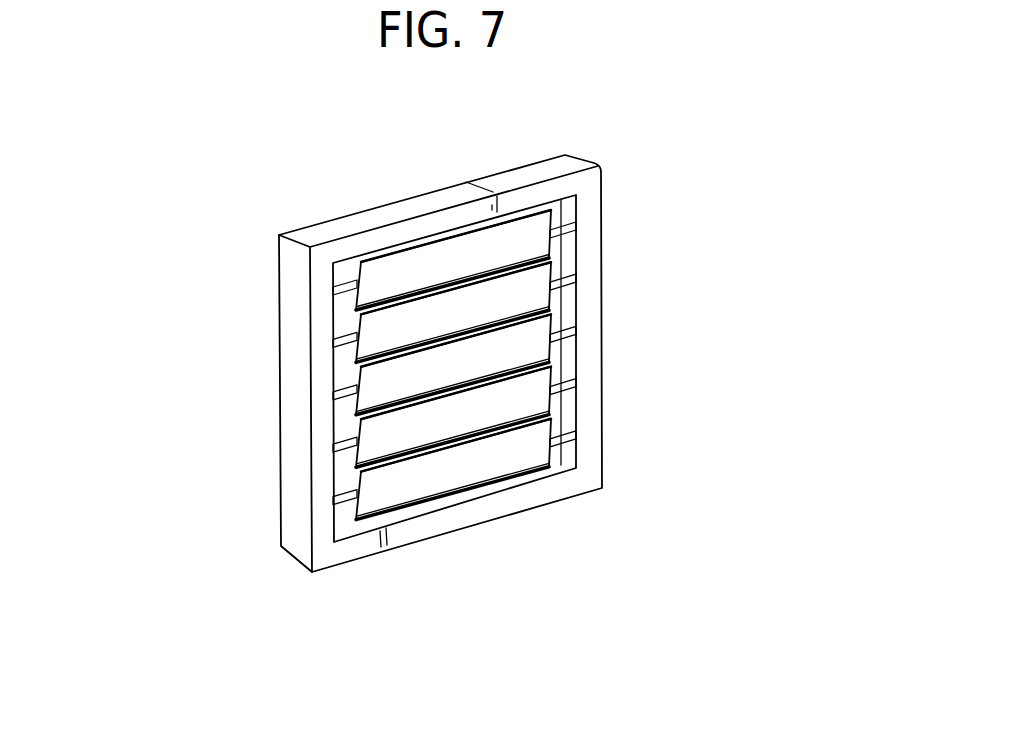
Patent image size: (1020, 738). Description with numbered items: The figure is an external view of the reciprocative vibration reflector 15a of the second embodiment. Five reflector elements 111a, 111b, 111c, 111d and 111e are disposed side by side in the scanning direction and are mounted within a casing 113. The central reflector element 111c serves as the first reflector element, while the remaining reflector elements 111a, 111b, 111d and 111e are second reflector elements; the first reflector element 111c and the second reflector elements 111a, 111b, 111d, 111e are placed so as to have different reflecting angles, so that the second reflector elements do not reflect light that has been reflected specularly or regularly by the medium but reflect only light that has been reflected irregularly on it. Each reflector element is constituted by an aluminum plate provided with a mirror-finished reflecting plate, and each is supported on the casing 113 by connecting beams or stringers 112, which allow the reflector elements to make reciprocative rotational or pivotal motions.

The reciprocative vibration reflector 15a is at (606, 139).
The second reflector element 111a is at (375, 286).
The second reflector element 111b is at (378, 344).
The first reflector element 111c is at (378, 396).
The second reflector element 111d is at (378, 447).
The second reflector element 111e is at (379, 498).
The connecting beams 112 is at (567, 222).
The casing 113 is at (300, 552).